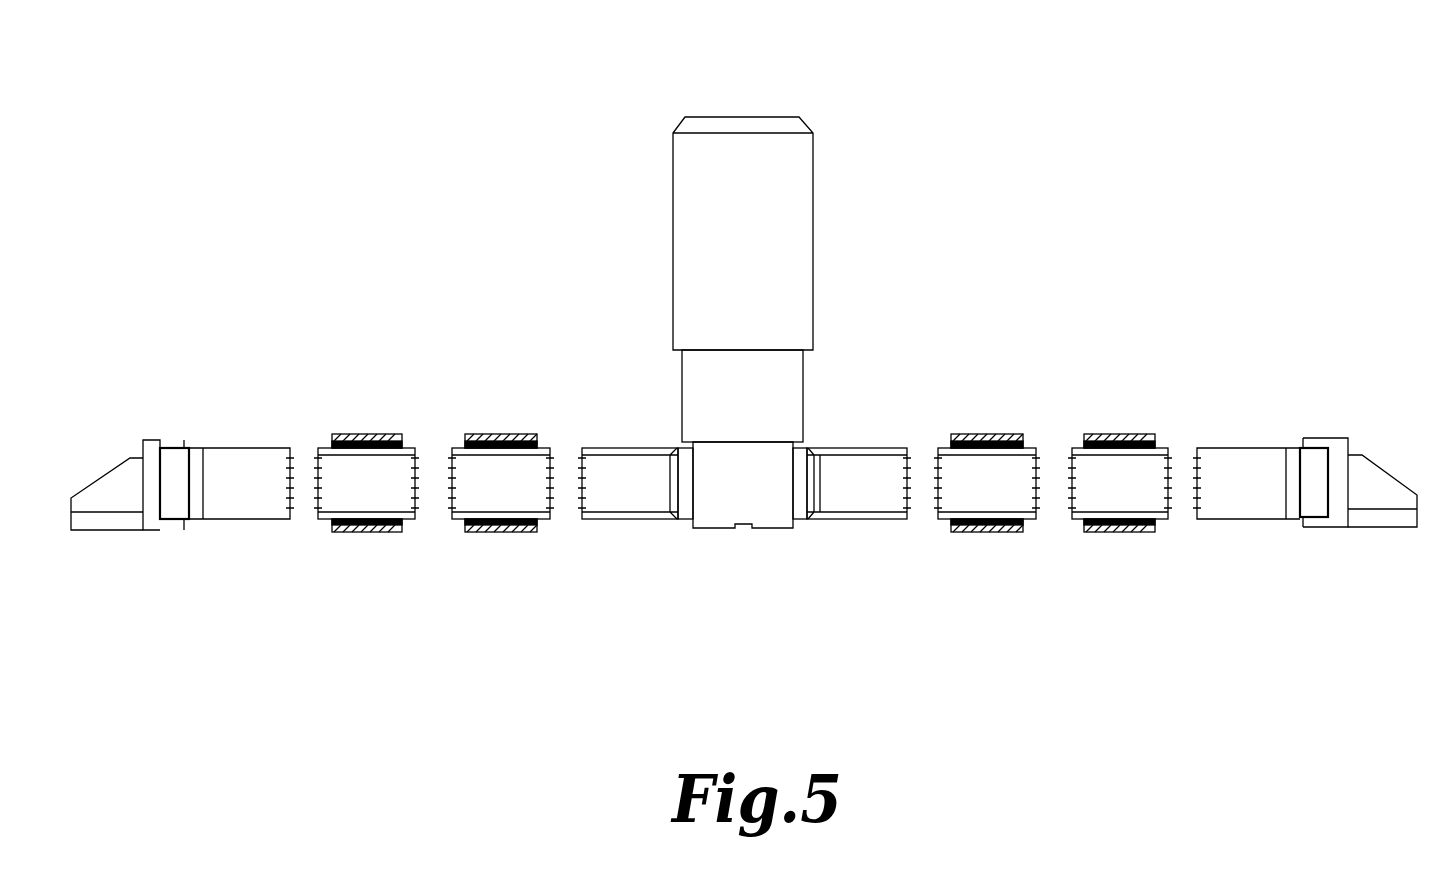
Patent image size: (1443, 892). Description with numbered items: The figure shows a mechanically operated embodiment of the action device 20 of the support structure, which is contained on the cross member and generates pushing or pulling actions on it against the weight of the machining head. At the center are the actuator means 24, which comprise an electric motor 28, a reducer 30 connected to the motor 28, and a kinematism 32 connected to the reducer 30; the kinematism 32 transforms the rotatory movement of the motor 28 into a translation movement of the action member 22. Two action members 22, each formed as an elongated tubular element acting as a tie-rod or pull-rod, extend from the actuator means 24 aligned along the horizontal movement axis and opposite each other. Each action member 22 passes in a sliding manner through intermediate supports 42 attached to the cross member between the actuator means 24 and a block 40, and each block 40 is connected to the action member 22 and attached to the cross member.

The action device 20 is at (1112, 250).
The action member 22 is at (1217, 445).
The actuator means 24 is at (860, 361).
The electric motor 28 is at (713, 180).
The reducer 30 is at (723, 403).
The kinematism 32 is at (715, 498).
The block 40 is at (116, 492).
The intermediate support 42 is at (492, 431).